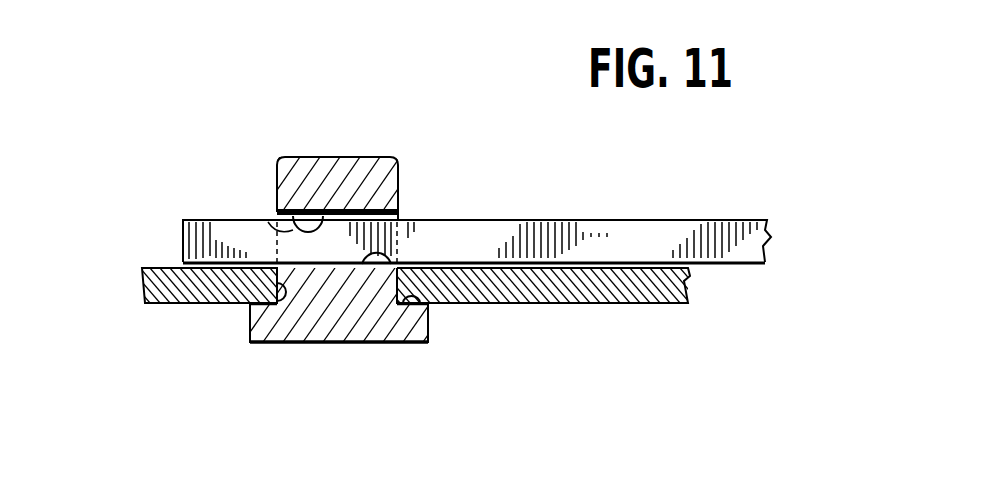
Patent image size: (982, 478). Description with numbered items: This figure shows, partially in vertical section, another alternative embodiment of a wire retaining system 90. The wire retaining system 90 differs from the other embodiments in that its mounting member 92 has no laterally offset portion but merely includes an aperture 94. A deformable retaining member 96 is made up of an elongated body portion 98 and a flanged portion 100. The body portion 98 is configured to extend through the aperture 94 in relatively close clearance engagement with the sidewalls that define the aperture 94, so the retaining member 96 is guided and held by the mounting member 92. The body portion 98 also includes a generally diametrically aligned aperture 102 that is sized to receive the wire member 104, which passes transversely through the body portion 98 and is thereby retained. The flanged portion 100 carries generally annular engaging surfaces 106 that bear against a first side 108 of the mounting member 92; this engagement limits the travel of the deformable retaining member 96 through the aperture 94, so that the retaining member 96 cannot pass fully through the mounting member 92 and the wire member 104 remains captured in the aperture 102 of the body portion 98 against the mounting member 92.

The wire retaining system 90 is at (581, 309).
The mounting member 92 is at (162, 305).
The aperture 94 is at (293, 288).
The deformable retaining member 96 is at (434, 338).
The elongated body portion 98 is at (398, 183).
The flanged portion 100 is at (432, 313).
The diametrically aligned aperture 102 is at (270, 222).
The wire member 104 is at (548, 230).
The annular engaging surfaces 106 is at (405, 300).
The first side 108 is at (660, 302).